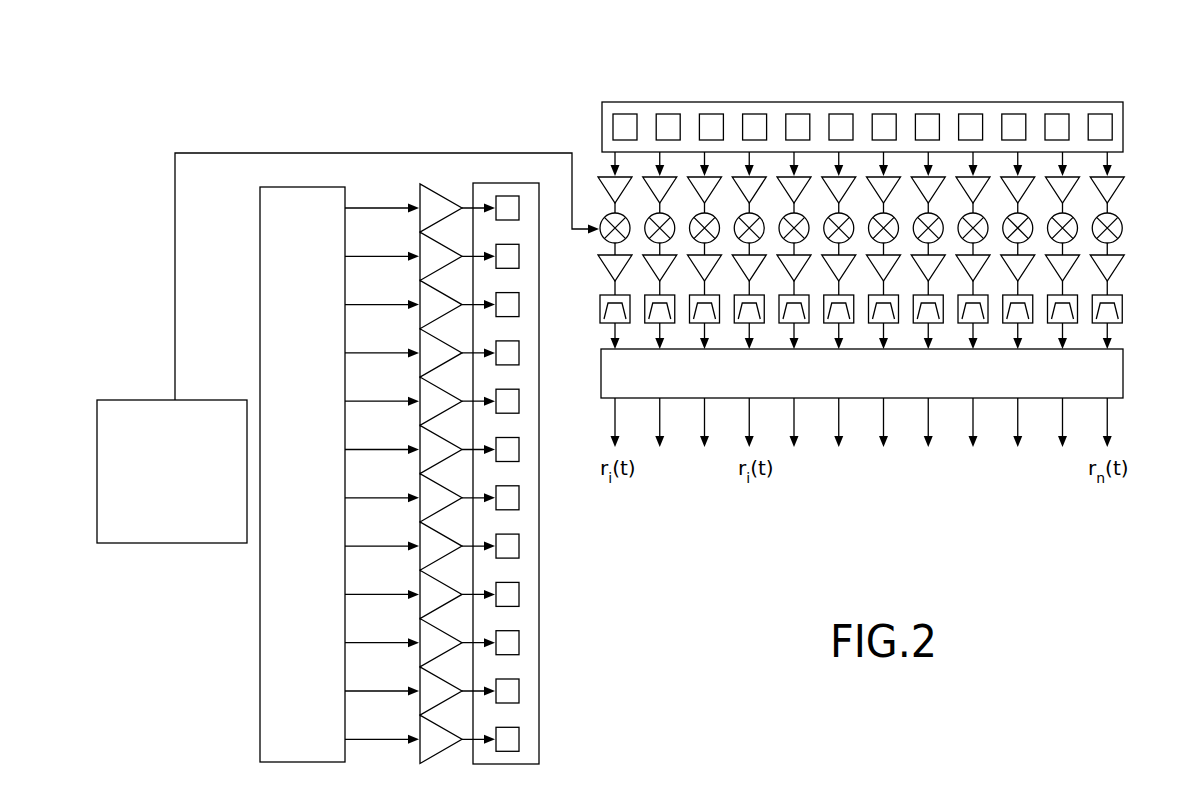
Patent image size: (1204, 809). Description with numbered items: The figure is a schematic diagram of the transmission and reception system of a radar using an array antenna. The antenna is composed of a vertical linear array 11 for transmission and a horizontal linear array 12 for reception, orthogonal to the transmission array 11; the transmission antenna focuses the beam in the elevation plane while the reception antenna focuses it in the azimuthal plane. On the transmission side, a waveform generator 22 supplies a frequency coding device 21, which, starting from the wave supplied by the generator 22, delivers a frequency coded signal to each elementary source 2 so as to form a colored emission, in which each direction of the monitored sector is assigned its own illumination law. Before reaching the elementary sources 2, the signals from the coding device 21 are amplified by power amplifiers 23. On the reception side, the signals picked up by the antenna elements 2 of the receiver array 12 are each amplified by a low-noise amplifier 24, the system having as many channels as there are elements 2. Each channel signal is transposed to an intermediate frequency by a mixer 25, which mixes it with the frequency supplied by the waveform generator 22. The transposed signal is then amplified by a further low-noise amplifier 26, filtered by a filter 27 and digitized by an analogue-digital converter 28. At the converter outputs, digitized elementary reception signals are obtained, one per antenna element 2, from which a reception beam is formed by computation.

The elementary source 2 is at (500, 542).
The vertical linear array 11 is at (540, 700).
The horizontal linear array 12 is at (953, 102).
The frequency coding device 21 is at (258, 644).
The waveform generator 22 is at (130, 545).
The power amplifier 23 is at (443, 192).
The low-noise amplifier 24 is at (1120, 185).
The mixer 25 is at (1122, 232).
The low-noise amplifier 26 is at (1122, 268).
The filter 27 is at (1123, 310).
The analogue-digital converter 28 is at (1123, 363).